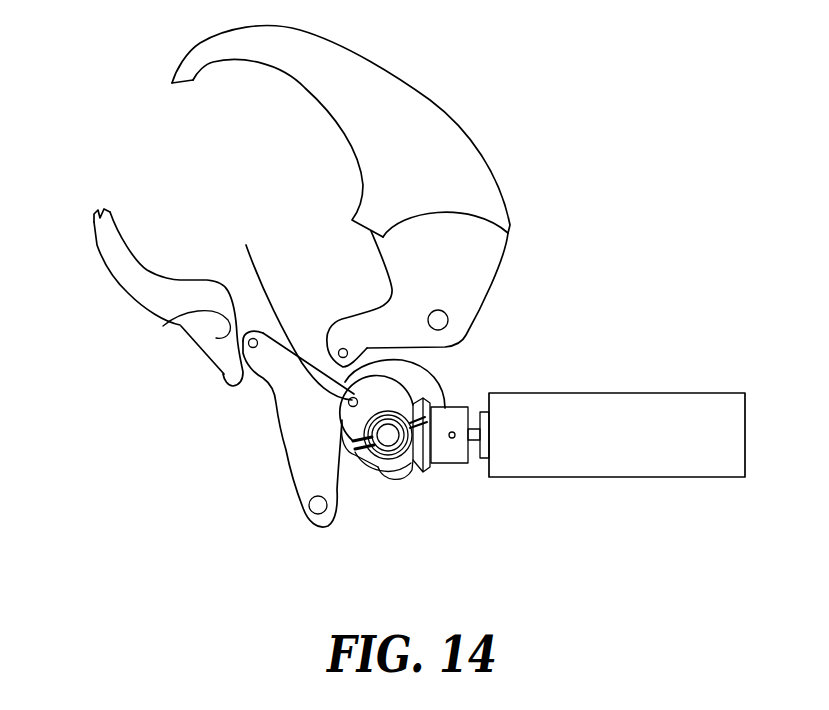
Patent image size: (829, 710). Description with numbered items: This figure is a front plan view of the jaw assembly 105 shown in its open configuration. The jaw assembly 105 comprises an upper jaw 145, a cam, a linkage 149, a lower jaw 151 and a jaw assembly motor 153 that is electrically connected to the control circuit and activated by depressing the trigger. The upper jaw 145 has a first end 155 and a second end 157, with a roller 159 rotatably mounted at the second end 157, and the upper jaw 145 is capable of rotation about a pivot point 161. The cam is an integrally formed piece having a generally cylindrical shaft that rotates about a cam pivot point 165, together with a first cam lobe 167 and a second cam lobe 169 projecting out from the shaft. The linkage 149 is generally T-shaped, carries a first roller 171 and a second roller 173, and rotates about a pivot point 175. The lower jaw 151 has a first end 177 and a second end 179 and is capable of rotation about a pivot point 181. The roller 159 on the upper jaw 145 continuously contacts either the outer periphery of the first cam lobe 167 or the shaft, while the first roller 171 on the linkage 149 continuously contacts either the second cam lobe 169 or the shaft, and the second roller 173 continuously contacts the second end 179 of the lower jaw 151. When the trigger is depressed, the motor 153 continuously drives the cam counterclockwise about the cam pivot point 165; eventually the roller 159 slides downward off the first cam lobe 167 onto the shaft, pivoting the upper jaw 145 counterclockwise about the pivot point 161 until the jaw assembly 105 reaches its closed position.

The jaw assembly 105 is at (581, 525).
The upper jaw 145 is at (467, 135).
The linkage 149 is at (288, 462).
The lower jaw 151 is at (113, 287).
The jaw assembly motor 153 is at (648, 392).
The first end 155 is at (182, 77).
The second end 157 is at (376, 309).
The roller 159 is at (343, 349).
The pivot point 161 is at (445, 316).
The cam pivot point 165 is at (390, 440).
The first cam lobe 167 is at (443, 380).
The second cam lobe 169 is at (407, 480).
The first roller 171 is at (350, 398).
The second roller 173 is at (256, 350).
The pivot point 175 is at (319, 514).
The first end 177 is at (105, 232).
The second end 179 is at (223, 375).
The pivot point 181 is at (163, 326).